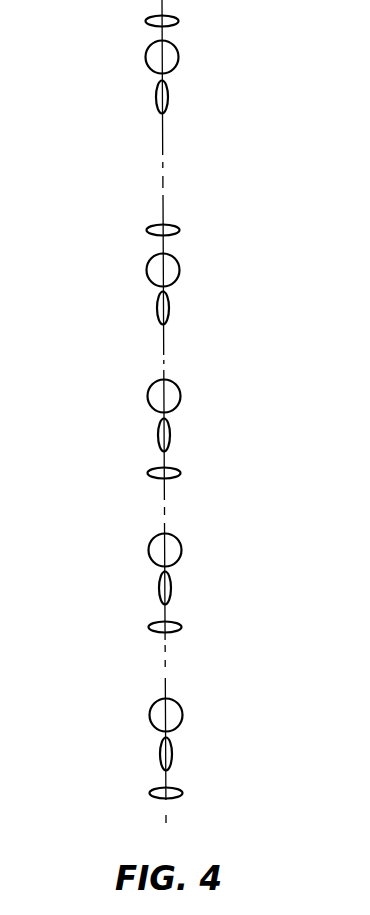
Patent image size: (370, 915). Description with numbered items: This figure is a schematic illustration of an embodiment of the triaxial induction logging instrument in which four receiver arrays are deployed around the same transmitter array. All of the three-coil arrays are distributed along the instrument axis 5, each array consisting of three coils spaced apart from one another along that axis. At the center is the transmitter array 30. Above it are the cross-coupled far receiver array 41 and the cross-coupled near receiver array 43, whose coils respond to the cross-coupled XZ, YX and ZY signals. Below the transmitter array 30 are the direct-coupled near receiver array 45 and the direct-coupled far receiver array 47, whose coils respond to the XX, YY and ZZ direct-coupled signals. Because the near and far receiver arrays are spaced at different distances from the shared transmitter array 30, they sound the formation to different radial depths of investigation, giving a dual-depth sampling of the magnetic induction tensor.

The instrument axis 5 is at (163, 152).
The cross-coupled far receiver array 41 is at (187, 15).
The cross-coupled near receiver array 43 is at (187, 223).
The transmitter array 30 is at (188, 378).
The direct-coupled near receiver array 45 is at (188, 532).
The direct-coupled far receiver array 47 is at (189, 697).